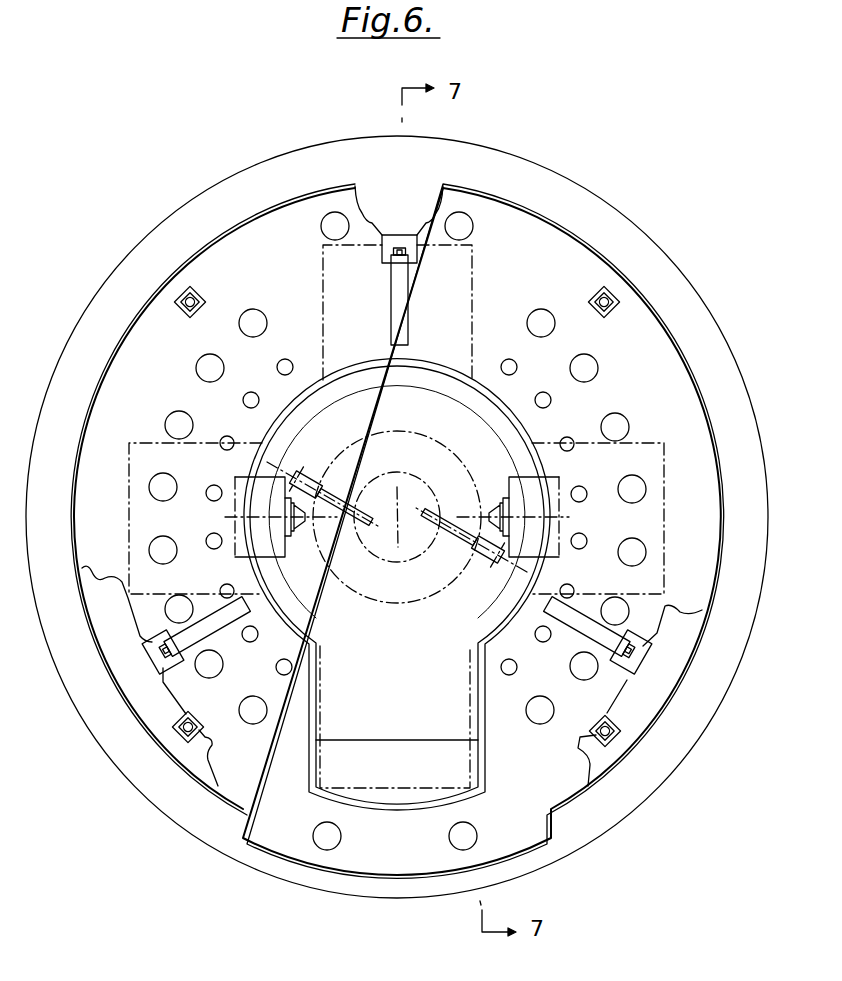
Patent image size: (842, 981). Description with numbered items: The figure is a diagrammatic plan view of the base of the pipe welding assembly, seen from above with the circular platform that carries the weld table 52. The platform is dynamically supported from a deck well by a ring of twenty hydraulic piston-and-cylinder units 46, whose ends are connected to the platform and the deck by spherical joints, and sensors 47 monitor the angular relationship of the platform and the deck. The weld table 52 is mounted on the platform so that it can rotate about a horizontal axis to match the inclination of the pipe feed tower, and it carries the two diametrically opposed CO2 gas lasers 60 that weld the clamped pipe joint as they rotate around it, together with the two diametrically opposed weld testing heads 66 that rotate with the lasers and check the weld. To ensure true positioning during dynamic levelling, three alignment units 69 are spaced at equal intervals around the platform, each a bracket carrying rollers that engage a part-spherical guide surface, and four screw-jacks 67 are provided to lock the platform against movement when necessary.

The hydraulic piston-and-cylinder units 46 is at (168, 499).
The sensors 47 is at (216, 455).
The weld table 52 is at (468, 300).
The CO2 gas lasers 60 is at (236, 551).
The weld testing heads 66 is at (306, 476).
The screw-jacks 67 is at (190, 313).
The alignment units 69 is at (407, 325).